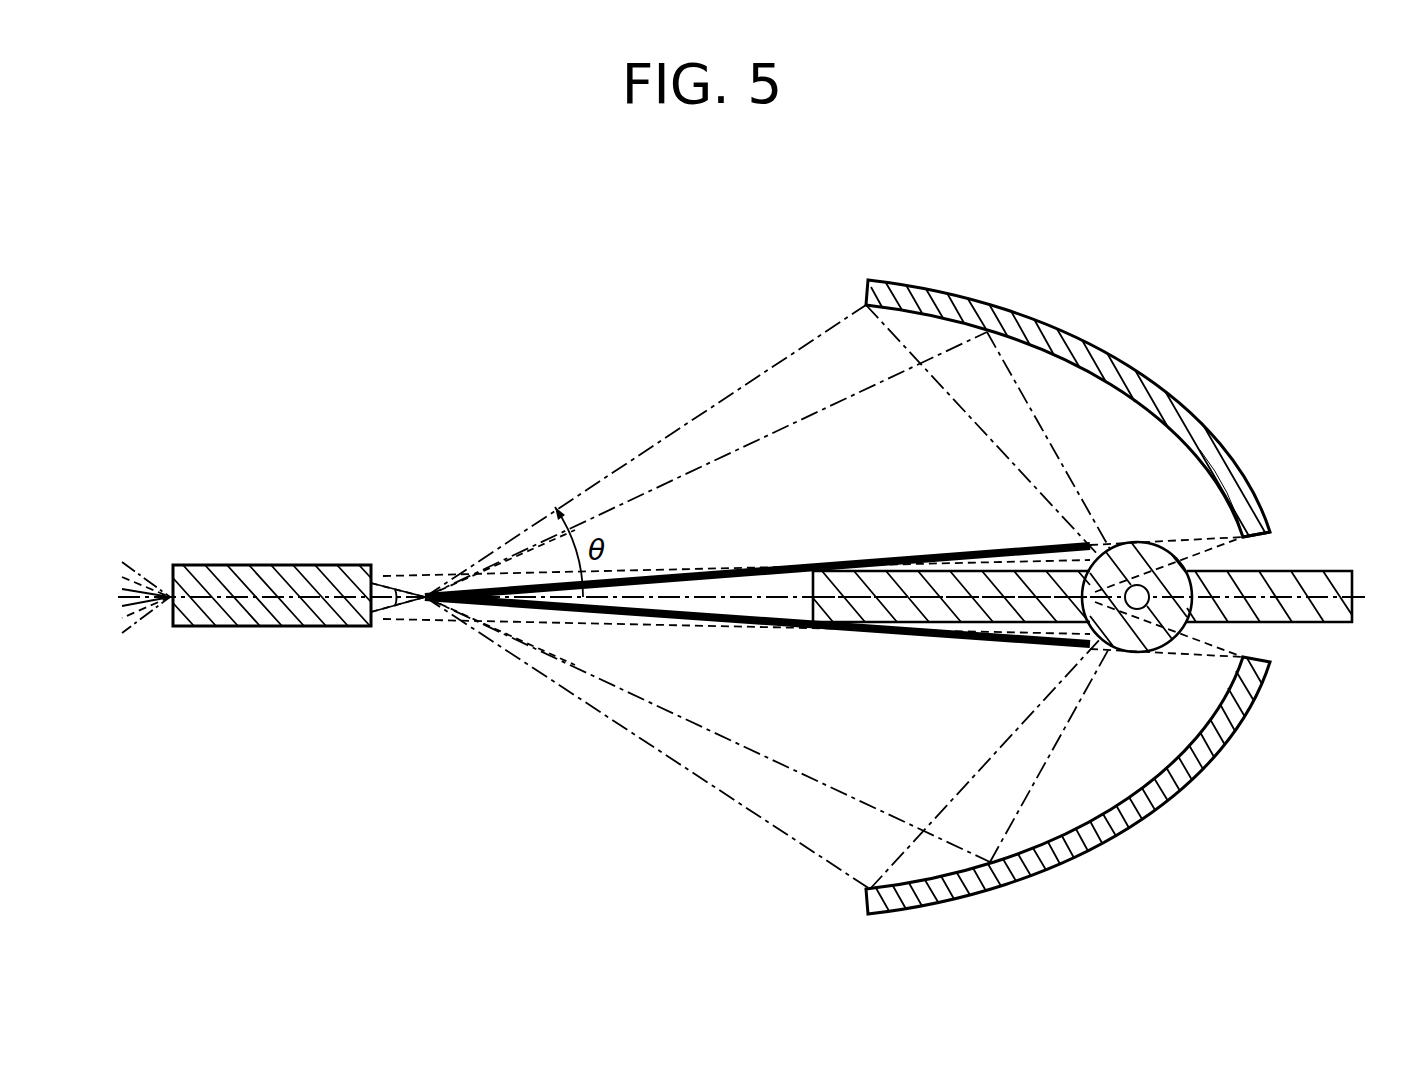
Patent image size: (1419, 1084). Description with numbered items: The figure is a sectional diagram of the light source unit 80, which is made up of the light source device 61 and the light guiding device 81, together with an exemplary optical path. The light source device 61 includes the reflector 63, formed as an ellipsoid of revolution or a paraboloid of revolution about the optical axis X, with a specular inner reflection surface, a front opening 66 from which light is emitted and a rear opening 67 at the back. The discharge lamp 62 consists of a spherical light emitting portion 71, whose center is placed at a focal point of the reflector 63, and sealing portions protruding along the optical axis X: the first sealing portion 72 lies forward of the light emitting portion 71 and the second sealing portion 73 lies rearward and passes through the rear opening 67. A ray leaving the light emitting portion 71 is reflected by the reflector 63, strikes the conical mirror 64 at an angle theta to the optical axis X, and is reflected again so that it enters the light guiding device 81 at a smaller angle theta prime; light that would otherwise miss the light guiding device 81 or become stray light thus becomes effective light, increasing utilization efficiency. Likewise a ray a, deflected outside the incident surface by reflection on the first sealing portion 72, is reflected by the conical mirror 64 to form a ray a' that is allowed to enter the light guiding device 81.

The light source unit 80 is at (450, 335).
The light guiding device 81 is at (278, 607).
The light source device 61 is at (1075, 610).
The discharge lamp 62 is at (955, 588).
The reflector 63 is at (1085, 835).
The conical mirror 64 is at (715, 622).
The front opening 66 is at (850, 345).
The rear opening 67 is at (1268, 548).
The light emitting portion 71 is at (1137, 560).
The first sealing portion 72 is at (920, 602).
The second sealing portion 73 is at (1298, 590).
The ray a is at (1215, 469).
The ray a' is at (757, 544).
The optical axis X is at (1330, 600).